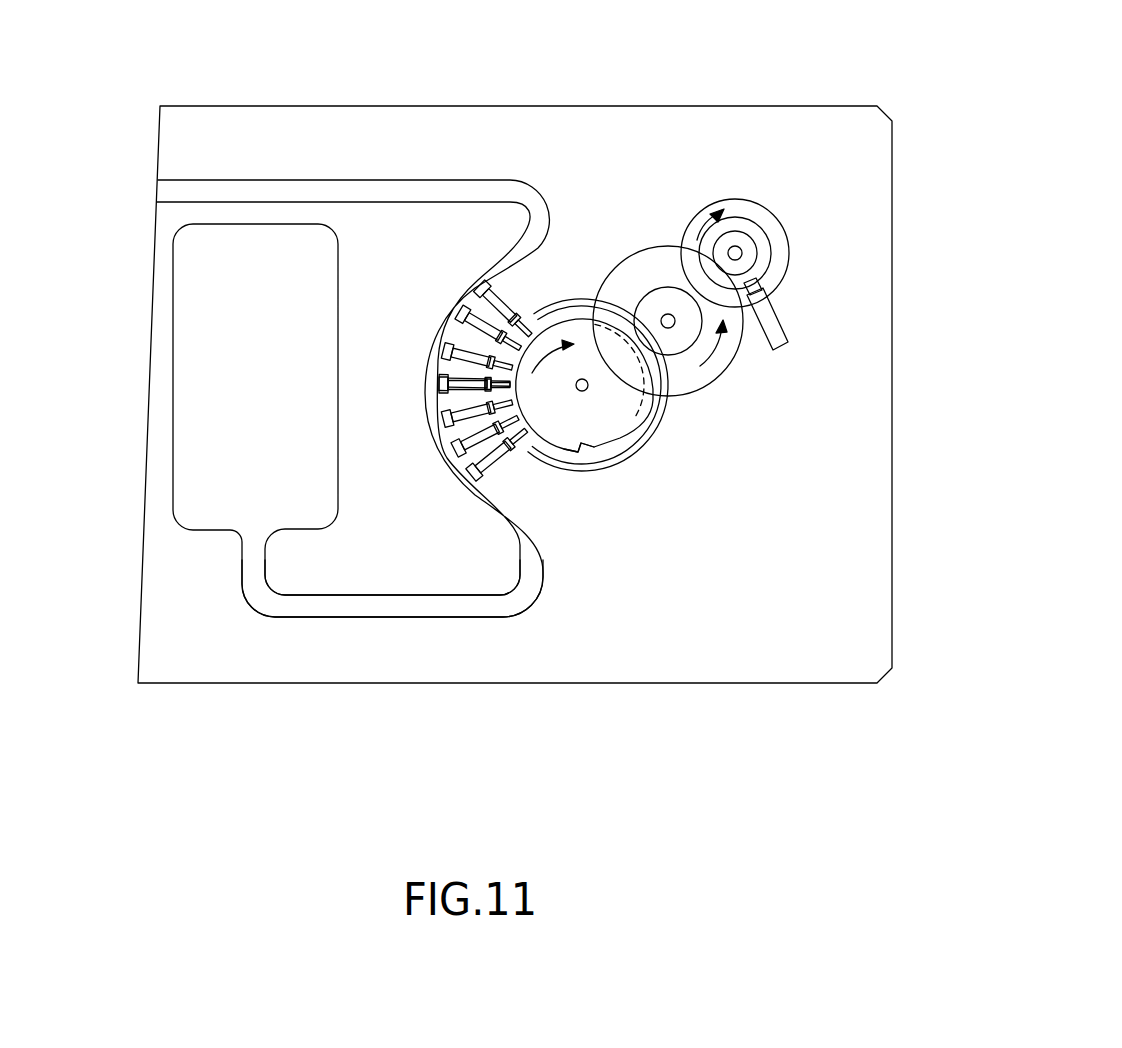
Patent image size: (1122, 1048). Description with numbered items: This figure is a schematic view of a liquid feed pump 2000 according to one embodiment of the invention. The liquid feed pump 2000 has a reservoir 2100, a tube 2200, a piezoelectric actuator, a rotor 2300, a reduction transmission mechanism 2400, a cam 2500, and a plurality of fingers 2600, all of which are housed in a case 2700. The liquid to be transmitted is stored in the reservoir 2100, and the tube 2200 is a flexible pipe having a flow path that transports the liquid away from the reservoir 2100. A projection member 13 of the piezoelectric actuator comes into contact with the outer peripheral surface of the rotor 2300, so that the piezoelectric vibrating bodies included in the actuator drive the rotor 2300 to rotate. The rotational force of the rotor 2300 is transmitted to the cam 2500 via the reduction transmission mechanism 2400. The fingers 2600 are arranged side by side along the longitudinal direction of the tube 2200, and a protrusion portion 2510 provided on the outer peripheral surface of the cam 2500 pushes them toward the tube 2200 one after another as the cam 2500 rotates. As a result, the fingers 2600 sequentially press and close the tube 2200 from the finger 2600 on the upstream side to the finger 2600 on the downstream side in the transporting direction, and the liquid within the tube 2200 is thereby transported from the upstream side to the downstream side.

The liquid feed pump 2000 is at (697, 93).
The reservoir 2100 is at (197, 283).
The tube 2200 is at (422, 607).
The rotor 2300 is at (758, 222).
The reduction transmission mechanism 2400 is at (736, 188).
The cam 2500 is at (628, 416).
The protrusion portion 2510 is at (598, 457).
The fingers 2600 is at (488, 282).
The case 2700 is at (667, 683).
The projection member 13 is at (770, 283).